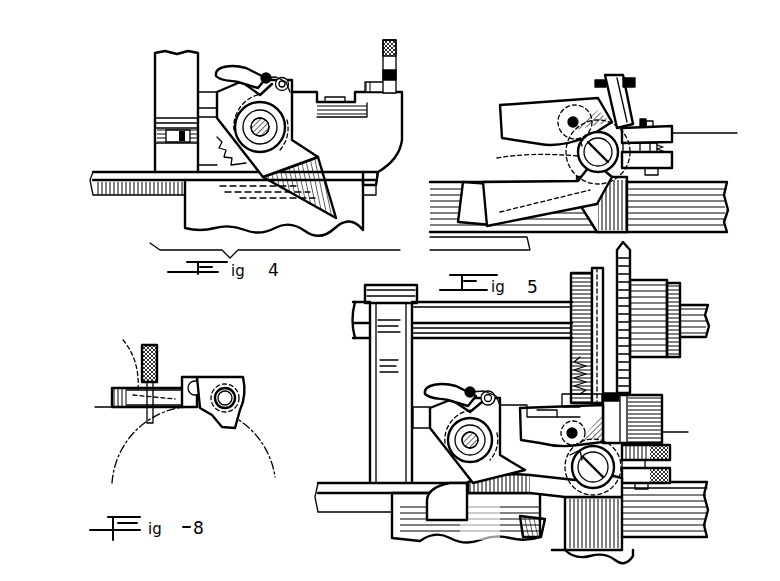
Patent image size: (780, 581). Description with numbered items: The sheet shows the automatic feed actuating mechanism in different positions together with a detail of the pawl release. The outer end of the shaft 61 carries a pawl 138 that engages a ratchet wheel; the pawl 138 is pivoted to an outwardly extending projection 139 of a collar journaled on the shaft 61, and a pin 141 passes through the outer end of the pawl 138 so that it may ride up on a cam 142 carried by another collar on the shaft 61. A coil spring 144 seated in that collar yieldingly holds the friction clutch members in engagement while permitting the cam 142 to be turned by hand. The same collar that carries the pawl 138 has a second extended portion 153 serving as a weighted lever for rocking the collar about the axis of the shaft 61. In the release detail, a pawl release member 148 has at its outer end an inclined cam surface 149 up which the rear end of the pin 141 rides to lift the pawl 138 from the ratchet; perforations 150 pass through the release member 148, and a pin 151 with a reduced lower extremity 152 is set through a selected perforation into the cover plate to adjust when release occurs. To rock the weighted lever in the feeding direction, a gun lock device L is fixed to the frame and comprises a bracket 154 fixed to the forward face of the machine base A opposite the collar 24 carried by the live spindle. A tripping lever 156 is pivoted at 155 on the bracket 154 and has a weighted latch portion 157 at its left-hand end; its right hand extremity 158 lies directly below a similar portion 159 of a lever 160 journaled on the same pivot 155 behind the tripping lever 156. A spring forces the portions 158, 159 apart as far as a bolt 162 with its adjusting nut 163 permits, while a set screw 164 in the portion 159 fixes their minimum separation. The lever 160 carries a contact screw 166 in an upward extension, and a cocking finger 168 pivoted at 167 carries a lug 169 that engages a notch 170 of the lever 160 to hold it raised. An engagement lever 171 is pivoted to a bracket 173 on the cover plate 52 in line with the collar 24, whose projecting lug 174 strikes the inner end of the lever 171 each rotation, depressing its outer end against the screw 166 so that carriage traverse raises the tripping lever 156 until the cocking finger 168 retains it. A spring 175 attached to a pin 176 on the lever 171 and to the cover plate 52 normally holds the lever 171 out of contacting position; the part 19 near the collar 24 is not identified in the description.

In FIG. 6, the pinion 19 is at (630, 250).
In FIG. 6, the adjustable collar 24 is at (578, 286).
In FIG. 4, the cover plate 52 is at (404, 100).
In FIG. 4, the shaft 61 is at (256, 135).
In FIG. 6, the shaft 61 is at (465, 447).
In FIG. 4, the pawl 138 is at (266, 76).
In FIG. 6, the pawl 138 is at (450, 388).
In FIG. 8, the pawl 138 is at (212, 380).
In FIG. 4, the outwardly extending projection 139 is at (288, 80).
In FIG. 6, the outwardly extending projection 139 is at (495, 390).
In FIG. 8, the outwardly extending projection 139 is at (238, 399).
In FIG. 4, the pin 141 is at (272, 76).
In FIG. 6, the pin 141 is at (474, 390).
In FIG. 8, the pin 141 is at (200, 384).
In FIG. 4, the cam 142 is at (225, 112).
In FIG. 6, the cam 142 is at (430, 412).
In FIG. 4, the coil spring 144 is at (284, 127).
In FIG. 6, the coil spring 144 is at (458, 440).
In FIG. 8, the pawl release member 148 is at (120, 387).
In FIG. 8, the inclined cam surface 149 is at (113, 397).
In FIG. 8, the perforations 150 is at (125, 356).
In FIG. 8, the pin 151 is at (158, 360).
In FIG. 4, the reduced lower extremity 152 is at (246, 148).
In FIG. 8, the reduced lower extremity 152 is at (154, 415).
In FIG. 4, the second extended portion 153 is at (315, 158).
In FIG. 6, the second extended portion 153 is at (538, 537).
In FIG. 5, the bracket 154 is at (600, 204).
In FIG. 6, the bracket 154 is at (622, 546).
In FIG. 5, the pivot 155 is at (580, 160).
In FIG. 6, the pivot 155 is at (575, 490).
In FIG. 5, the tripping lever 156 is at (518, 180).
In FIG. 6, the tripping lever 156 is at (480, 493).
In FIG. 5, the weighted latch portion 157 is at (475, 203).
In FIG. 6, the weighted latch portion 157 is at (447, 501).
In FIG. 5, the right hand extremity 158 is at (672, 156).
In FIG. 6, the right hand extremity 158 is at (672, 478).
In FIG. 5, the similar portion 159 is at (670, 130).
In FIG. 6, the similar portion 159 is at (672, 454).
In FIG. 5, the lever 160 is at (615, 105).
In FIG. 6, the lever 160 is at (655, 406).
In FIG. 5, the bolt 162 is at (659, 172).
In FIG. 5, the adjusting nut 163 is at (650, 124).
In FIG. 5, the set screw 164 is at (646, 113).
In FIG. 5, the contact screw 166 is at (598, 79).
In FIG. 6, the contact screw 166 is at (628, 398).
In FIG. 5, the pivot point 167 is at (573, 118).
In FIG. 6, the pivot point 167 is at (573, 433).
In FIG. 5, the cocking finger 168 is at (556, 121).
In FIG. 6, the cocking finger 168 is at (551, 427).
In FIG. 5, the lug 169 is at (572, 146).
In FIG. 6, the lug 169 is at (570, 460).
In FIG. 5, the notch 170 is at (525, 160).
In FIG. 4, the engagement lever 171 is at (397, 49).
In FIG. 6, the engagement lever 171 is at (572, 322).
In FIG. 4, the bracket 173 is at (366, 84).
In FIG. 6, the projecting lug 174 is at (598, 270).
In FIG. 6, the spring 175 is at (580, 382).
In FIG. 6, the pin 176 is at (576, 362).
In FIG. 5, the machine base A is at (727, 212).
In FIG. 6, the machine base A is at (707, 527).
In FIG. 5, the gun lock device L is at (710, 134).
In FIG. 6, the gun lock device L is at (681, 433).